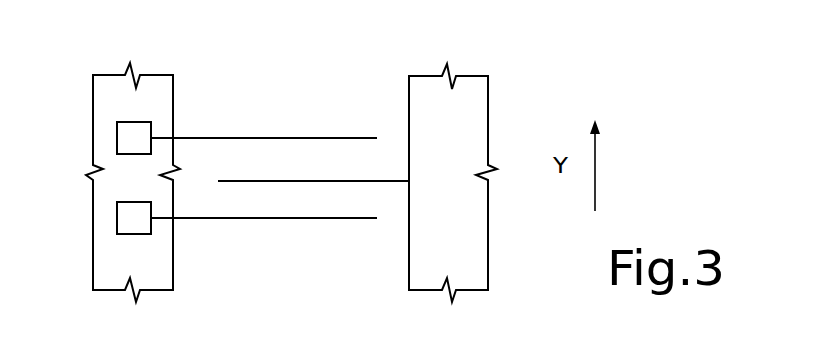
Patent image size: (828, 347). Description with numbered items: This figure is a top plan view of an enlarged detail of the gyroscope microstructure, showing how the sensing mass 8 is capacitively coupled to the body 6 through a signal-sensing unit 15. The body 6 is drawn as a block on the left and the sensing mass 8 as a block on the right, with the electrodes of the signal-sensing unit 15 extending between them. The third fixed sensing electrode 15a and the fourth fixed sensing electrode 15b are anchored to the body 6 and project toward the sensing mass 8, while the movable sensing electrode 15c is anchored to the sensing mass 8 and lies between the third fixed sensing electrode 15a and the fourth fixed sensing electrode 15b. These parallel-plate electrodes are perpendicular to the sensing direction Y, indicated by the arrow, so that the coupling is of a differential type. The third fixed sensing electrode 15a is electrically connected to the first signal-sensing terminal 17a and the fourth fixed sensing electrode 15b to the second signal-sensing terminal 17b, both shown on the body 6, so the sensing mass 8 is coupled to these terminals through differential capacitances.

The body 6 is at (103, 279).
The sensing mass 8 is at (483, 117).
The signal-sensing unit 15 is at (343, 111).
The third fixed sensing electrode 15a is at (232, 137).
The fourth fixed sensing electrode 15b is at (214, 219).
The movable sensing electrode 15c is at (380, 182).
The first signal-sensing terminal 17a is at (117, 138).
The second signal-sensing terminal 17b is at (117, 218).